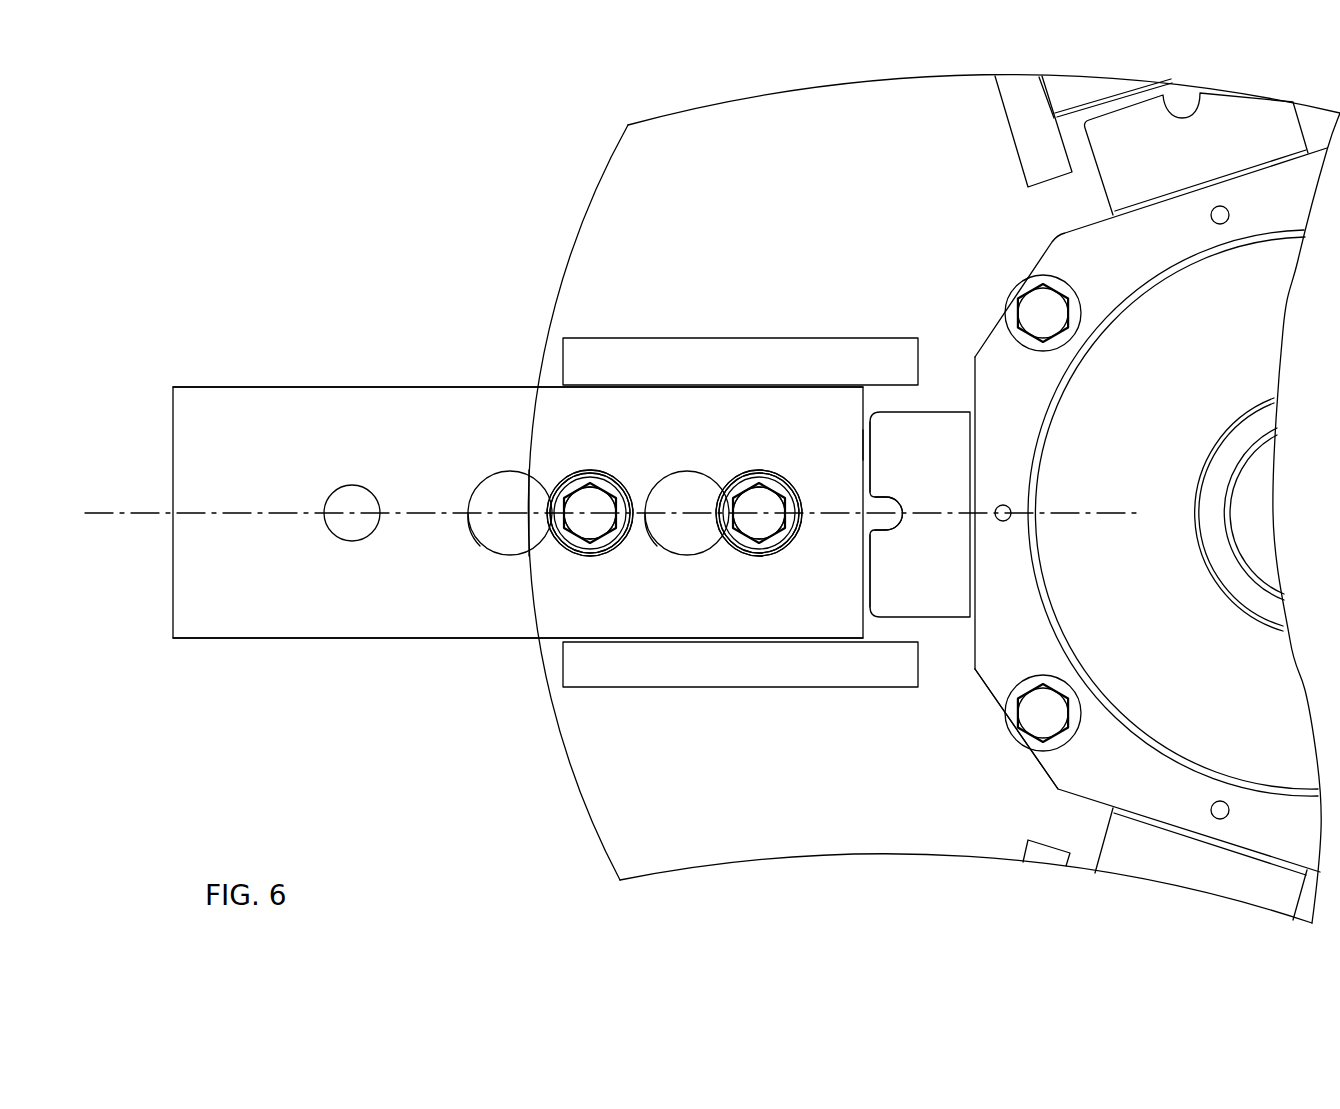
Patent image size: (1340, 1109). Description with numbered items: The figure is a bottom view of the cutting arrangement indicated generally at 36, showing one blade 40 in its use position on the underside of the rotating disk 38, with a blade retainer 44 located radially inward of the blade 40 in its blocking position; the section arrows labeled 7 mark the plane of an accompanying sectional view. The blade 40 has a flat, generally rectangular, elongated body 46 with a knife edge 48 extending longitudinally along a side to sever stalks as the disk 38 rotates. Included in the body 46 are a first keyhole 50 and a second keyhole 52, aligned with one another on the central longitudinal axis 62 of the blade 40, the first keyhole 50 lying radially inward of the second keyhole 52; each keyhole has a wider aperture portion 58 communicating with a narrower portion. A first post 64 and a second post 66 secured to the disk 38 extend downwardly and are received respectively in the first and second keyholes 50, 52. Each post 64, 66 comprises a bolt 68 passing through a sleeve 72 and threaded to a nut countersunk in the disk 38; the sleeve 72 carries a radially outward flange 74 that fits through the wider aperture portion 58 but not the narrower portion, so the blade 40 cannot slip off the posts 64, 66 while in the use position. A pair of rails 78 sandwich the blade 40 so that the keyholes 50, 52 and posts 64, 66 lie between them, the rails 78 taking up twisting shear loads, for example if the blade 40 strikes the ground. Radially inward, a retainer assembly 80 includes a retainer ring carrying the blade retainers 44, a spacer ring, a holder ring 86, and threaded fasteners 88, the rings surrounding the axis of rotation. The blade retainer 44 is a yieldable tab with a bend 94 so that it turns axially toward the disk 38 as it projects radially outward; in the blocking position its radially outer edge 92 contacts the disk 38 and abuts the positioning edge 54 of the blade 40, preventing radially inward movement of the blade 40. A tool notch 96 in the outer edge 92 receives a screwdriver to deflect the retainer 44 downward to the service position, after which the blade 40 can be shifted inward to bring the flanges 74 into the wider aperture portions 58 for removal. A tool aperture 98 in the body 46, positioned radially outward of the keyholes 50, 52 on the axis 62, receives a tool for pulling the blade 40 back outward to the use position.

The section line 7- 7 is at (101, 548).
The mounting assembly 36 is at (261, 133).
The disk 38 is at (634, 187).
The blade 40 is at (325, 670).
The blade retainer 44 is at (937, 612).
The body 46 is at (303, 425).
The knife edge 48 is at (232, 386).
The first keyhole 50 is at (690, 470).
The second keyhole 52 is at (513, 471).
The positioning edge 54 is at (870, 443).
The wider aperture portion 58 is at (475, 548).
The central longitudinal axis 62 is at (205, 517).
The first post 64 is at (761, 456).
The second post 66 is at (604, 456).
The bolt 68 is at (588, 525).
The sleeve 72 is at (570, 553).
The flange 74 is at (607, 557).
The rails 78 is at (650, 355).
The retainer assembly 80 is at (994, 787).
The holder ring 86 is at (1063, 767).
The threaded fasteners 88 is at (1043, 302).
The radially outer edge 92 is at (866, 570).
The bend 94 is at (968, 425).
The tool notch 96 is at (890, 522).
The tool aperture 98 is at (340, 528).